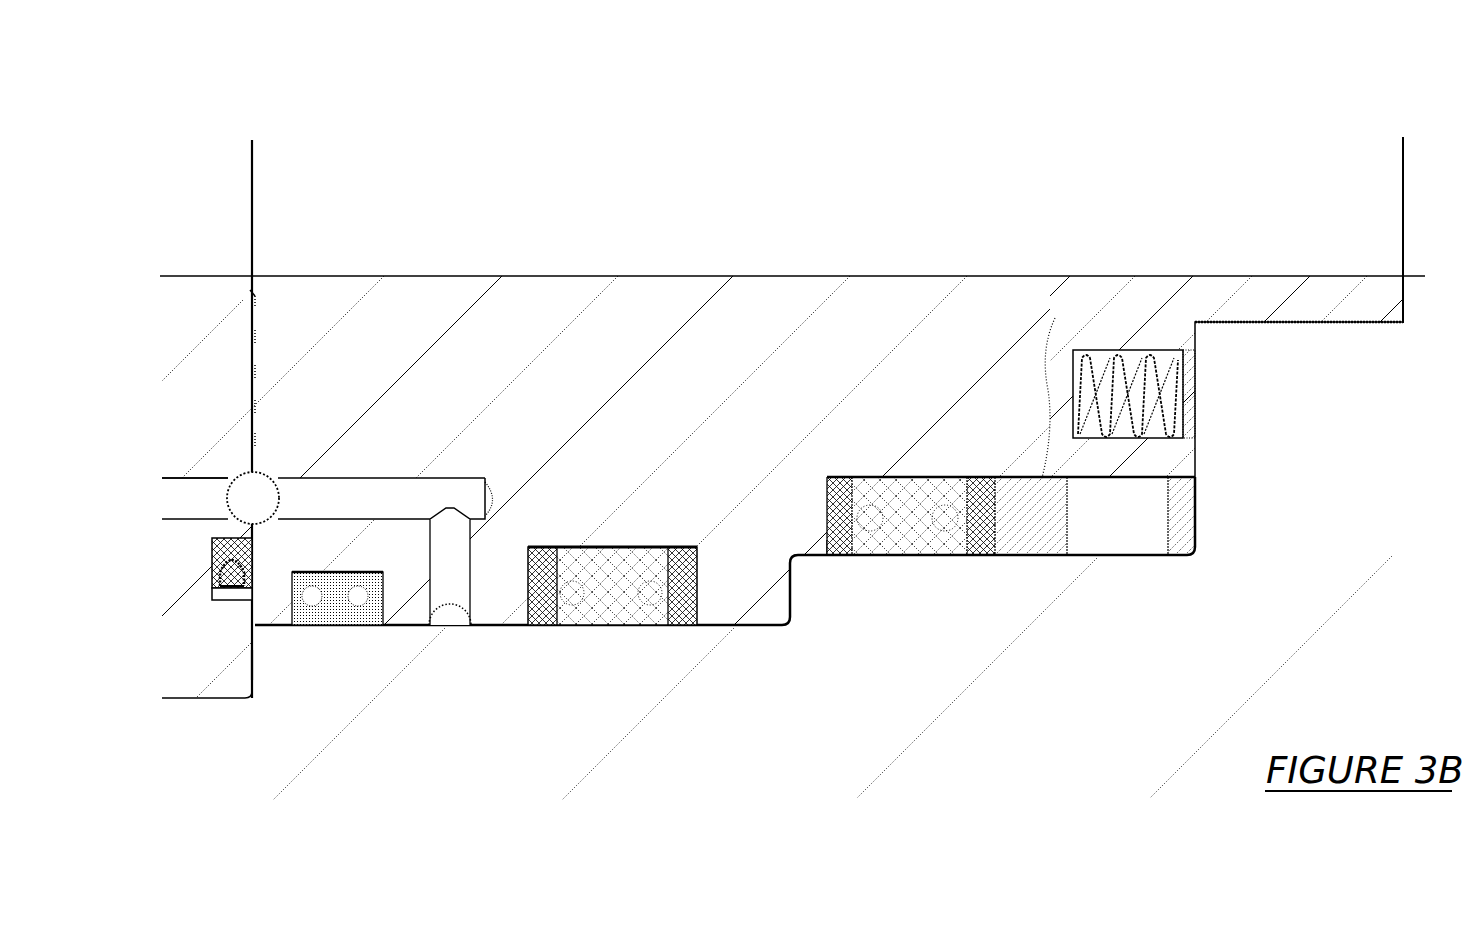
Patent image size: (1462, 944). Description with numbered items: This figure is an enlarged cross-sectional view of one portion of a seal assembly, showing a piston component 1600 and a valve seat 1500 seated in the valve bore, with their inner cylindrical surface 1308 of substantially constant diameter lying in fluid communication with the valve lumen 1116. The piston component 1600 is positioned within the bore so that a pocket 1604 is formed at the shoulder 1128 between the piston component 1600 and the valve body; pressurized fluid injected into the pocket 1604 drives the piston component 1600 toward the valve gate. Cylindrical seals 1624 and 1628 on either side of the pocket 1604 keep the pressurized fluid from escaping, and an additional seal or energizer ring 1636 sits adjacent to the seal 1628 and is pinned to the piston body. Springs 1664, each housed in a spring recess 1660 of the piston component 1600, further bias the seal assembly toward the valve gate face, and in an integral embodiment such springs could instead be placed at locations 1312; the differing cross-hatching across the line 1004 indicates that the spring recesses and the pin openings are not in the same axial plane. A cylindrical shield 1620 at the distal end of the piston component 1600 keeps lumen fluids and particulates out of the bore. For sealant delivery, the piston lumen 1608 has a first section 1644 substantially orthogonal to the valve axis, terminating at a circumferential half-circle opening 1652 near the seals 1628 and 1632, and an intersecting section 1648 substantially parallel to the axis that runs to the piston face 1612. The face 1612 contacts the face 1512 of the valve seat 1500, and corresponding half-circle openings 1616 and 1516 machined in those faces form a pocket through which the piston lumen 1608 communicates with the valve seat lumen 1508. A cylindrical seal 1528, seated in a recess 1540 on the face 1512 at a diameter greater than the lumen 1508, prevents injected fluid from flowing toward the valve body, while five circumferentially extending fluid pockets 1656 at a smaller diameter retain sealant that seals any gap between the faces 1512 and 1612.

The line 1004 is at (1062, 317).
The valve lumen 1116 is at (1027, 110).
The shoulder 1128 is at (783, 597).
The inner cylindrical surface 1308 is at (905, 275).
The locations 1312 is at (251, 670).
The valve seat 1500 is at (198, 275).
The valve seat lumen 1508 is at (192, 497).
The face 1512 is at (250, 293).
The cylindrical half-circle opening 1516 is at (225, 505).
The cylindrical seal 1528 is at (240, 587).
The recess 1540 is at (230, 597).
The piston component 1600 is at (1010, 275).
The pocket 1604 is at (787, 627).
The piston lumen 1608 is at (467, 500).
The face 1612 is at (254, 293).
The cylindrical half-circle opening 1616 is at (267, 477).
The shield 1620 is at (1377, 322).
The cylindrical seal 1624 is at (932, 548).
The cylindrical seal 1628 is at (630, 632).
The circumferential seal 1632 is at (317, 627).
The cylindrical seal 1636 is at (1043, 556).
The first section 1644 is at (462, 568).
The intersecting section 1648 is at (385, 492).
The circumferential half-circle opening 1652 is at (427, 615).
The fluid pockets 1656 is at (254, 437).
The spring recess 1660 is at (1163, 350).
The spring 1664 is at (1195, 427).